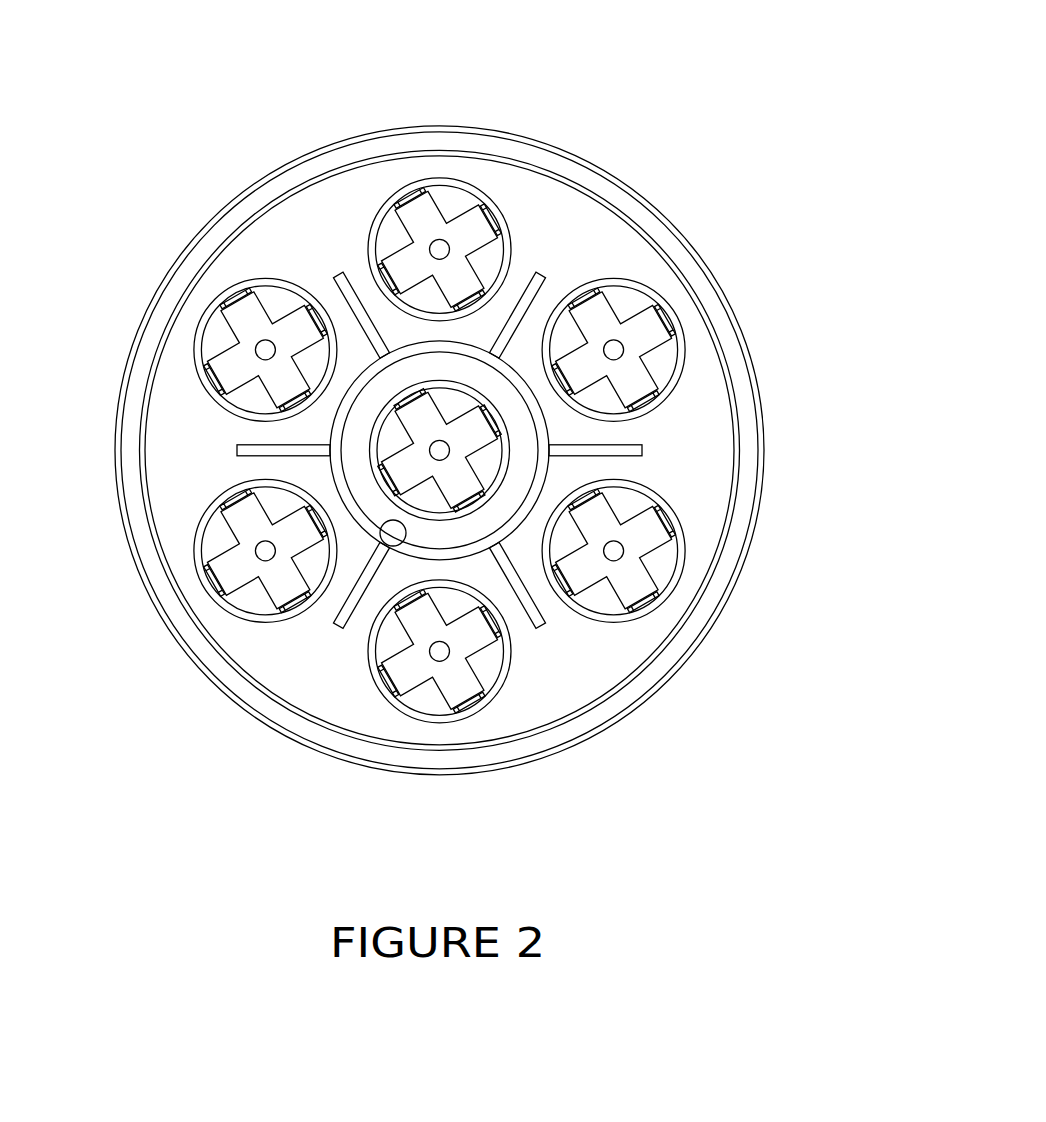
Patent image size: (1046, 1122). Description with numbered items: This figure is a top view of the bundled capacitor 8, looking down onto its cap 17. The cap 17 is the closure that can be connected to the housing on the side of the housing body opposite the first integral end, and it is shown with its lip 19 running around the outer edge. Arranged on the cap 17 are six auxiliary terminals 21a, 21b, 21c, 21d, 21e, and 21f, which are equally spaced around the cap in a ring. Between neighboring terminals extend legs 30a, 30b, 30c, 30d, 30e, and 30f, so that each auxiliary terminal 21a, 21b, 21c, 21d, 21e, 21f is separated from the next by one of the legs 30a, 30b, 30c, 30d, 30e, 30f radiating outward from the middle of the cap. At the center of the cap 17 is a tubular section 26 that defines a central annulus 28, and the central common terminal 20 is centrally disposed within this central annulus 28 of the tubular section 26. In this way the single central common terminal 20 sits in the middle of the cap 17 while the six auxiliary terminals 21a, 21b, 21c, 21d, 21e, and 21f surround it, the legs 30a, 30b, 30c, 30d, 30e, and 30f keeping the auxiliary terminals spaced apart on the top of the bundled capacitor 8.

The bundled capacitor 8 is at (722, 67).
The cap 17 is at (236, 253).
The lip 19 is at (665, 232).
The central common terminal 20 is at (523, 436).
The auxiliary terminal 21a is at (198, 589).
The auxiliary terminal 21b is at (198, 311).
The auxiliary terminal 21c is at (440, 170).
The auxiliary terminal 21d is at (683, 315).
The auxiliary terminal 21e is at (683, 587).
The auxiliary terminal 21f is at (440, 730).
The tubular section 26 is at (331, 434).
The central annulus 28 is at (385, 545).
The leg 30a is at (237, 454).
The leg 30b is at (352, 298).
The leg 30c is at (528, 295).
The leg 30d is at (620, 451).
The leg 30e is at (540, 628).
The leg 30f is at (340, 624).